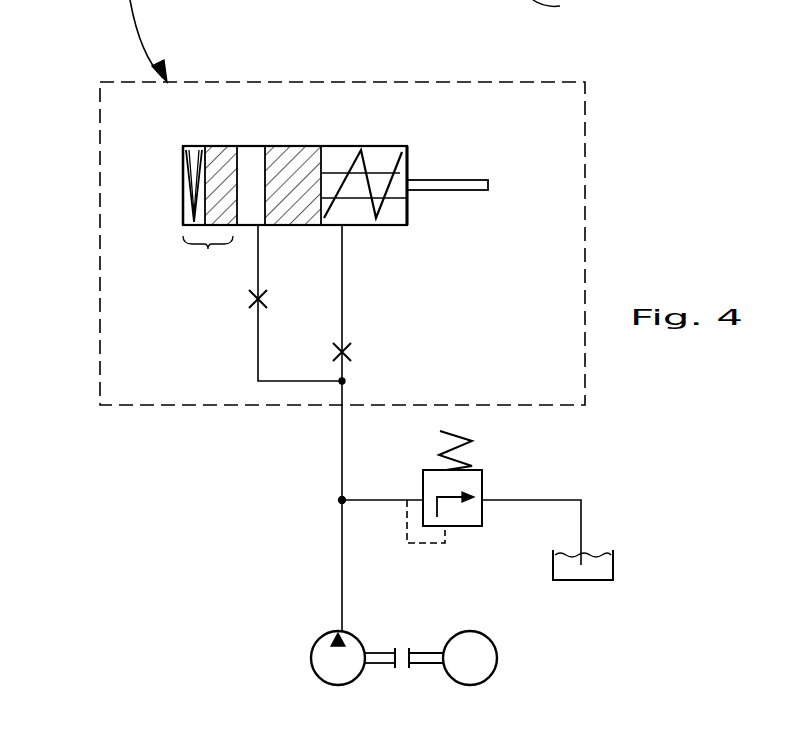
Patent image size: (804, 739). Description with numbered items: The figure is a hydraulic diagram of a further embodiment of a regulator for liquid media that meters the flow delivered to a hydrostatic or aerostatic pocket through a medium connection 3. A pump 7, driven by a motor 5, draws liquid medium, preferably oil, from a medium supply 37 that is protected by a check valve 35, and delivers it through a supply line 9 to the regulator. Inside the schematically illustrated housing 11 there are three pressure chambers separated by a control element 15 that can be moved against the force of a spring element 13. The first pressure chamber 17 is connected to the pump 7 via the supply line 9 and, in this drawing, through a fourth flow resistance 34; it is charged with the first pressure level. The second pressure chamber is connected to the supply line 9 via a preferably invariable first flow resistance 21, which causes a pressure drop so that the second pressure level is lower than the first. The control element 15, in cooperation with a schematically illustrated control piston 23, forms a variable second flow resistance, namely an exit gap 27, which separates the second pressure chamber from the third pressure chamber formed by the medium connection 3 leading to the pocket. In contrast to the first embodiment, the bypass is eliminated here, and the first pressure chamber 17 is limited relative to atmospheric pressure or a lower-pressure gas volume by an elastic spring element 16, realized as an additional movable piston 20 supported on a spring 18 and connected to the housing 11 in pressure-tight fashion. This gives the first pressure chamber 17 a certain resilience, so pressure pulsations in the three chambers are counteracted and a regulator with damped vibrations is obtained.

The housing 11 is at (115, 123).
The additional movable piston 20 is at (220, 165).
The spring 18 is at (183, 183).
The elastic spring element 16 is at (220, 247).
The first pressure chamber 17 is at (252, 165).
The control element 15 is at (292, 165).
The control piston 23 is at (373, 183).
The spring element 13 is at (353, 148).
The exit gap 27 is at (397, 225).
The medium connection 3 is at (487, 180).
The fourth flow resistance 34 is at (247, 297).
The supply line 9 is at (338, 462).
The first flow resistance 21 is at (352, 350).
The check valve 35 is at (483, 463).
The medium supply 37 is at (598, 545).
The pump 7 is at (312, 675).
The motor 5 is at (495, 675).